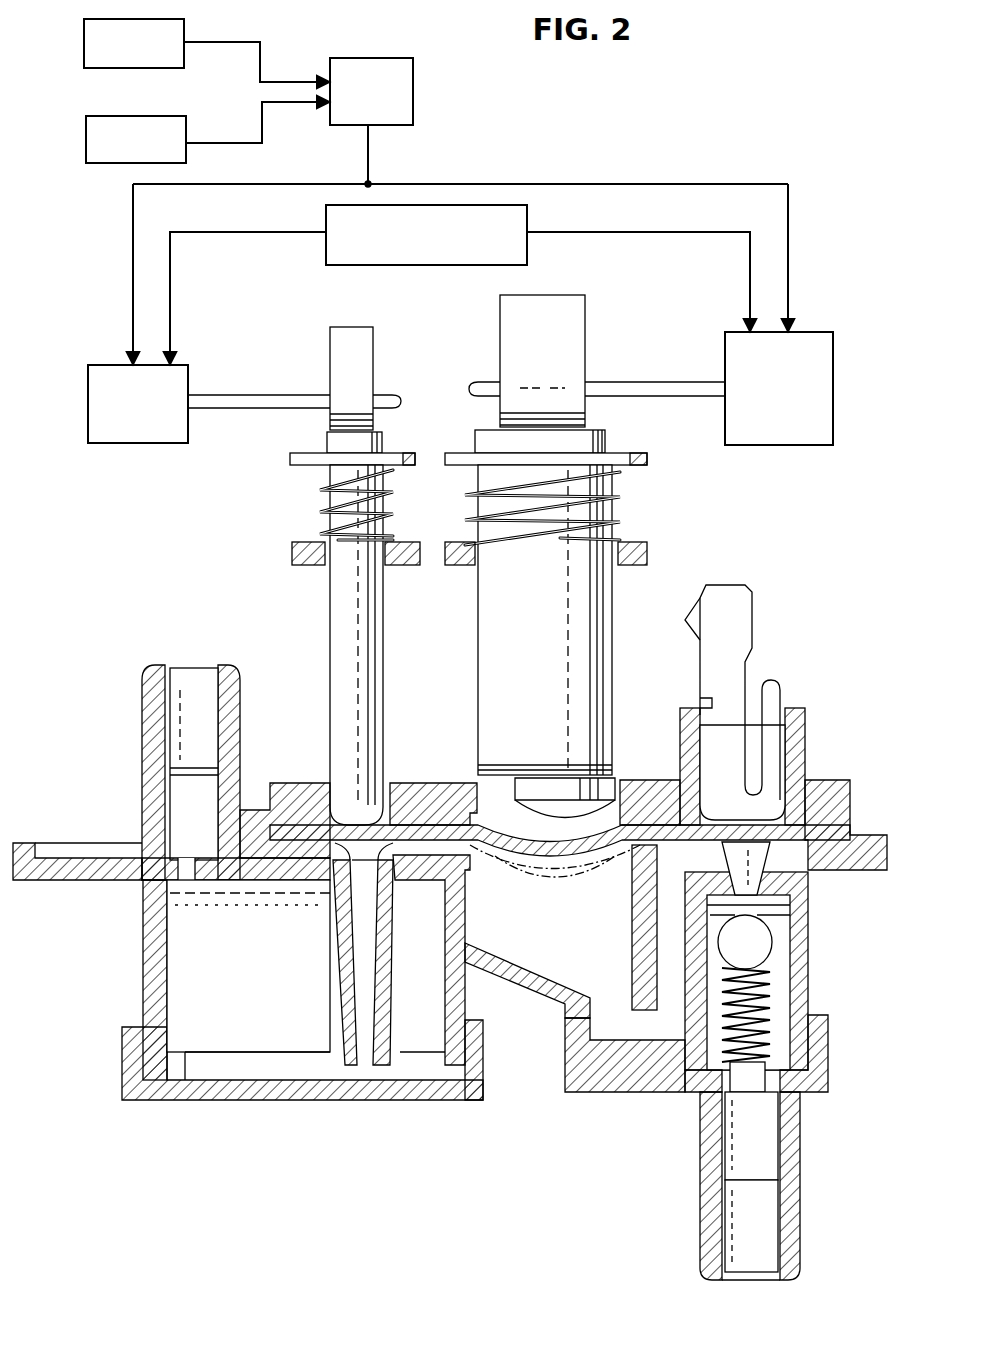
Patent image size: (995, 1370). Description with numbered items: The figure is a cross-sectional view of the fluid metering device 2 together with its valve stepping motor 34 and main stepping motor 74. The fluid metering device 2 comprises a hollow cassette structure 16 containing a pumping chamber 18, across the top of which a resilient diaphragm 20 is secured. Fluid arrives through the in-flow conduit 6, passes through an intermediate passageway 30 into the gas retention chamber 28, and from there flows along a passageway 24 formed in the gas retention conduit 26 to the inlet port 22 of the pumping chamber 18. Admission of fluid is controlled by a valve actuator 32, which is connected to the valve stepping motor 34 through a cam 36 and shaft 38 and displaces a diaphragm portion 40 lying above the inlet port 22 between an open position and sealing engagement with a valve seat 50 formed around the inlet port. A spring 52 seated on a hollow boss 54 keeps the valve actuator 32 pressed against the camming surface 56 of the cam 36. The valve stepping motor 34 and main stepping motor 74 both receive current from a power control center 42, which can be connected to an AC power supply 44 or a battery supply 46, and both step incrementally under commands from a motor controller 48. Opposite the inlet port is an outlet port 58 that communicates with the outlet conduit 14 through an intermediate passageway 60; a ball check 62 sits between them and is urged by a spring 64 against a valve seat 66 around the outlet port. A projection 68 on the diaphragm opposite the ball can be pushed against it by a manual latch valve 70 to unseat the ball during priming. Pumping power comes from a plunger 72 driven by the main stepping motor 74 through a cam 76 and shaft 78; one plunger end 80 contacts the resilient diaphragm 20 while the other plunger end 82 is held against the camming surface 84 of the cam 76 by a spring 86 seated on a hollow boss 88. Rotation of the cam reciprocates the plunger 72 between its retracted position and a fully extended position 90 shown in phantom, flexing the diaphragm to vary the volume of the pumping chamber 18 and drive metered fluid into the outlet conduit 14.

The fluid metering device 2 is at (105, 1130).
The in-flow conduit 6 is at (140, 715).
The outlet conduit 14 is at (790, 1243).
The hollow cassette structure 16 is at (585, 1092).
The pumping chamber 18 is at (562, 941).
The resilient diaphragm 20 is at (440, 782).
The inlet port 22 is at (372, 914).
The passageway 24 is at (353, 959).
The gas retention conduit 26 is at (345, 1080).
The gas retention chamber 28 is at (236, 956).
The intermediate passageway 30 is at (175, 895).
The valve actuator 32 is at (330, 648).
The valve stepping motor 34 is at (118, 445).
The cam 36 is at (330, 379).
The shaft 38 is at (268, 410).
The diaphragm portion 40 is at (338, 760).
The power control center 42 is at (413, 95).
The AC power supply 44 is at (84, 42).
The battery supply 46 is at (86, 145).
The motor controller 48 is at (424, 267).
The valve seat 50 is at (438, 977).
The spring 52 is at (320, 514).
The hollow boss 54 is at (292, 556).
The camming surface 56 is at (343, 353).
The outlet port 58 is at (755, 915).
The intermediate passageway 60 is at (760, 1085).
The ball check 62 is at (775, 1000).
The spring 64 is at (828, 1030).
The valve seat 66 is at (760, 950).
The projection 68 is at (770, 890).
The manual latch valve 70 is at (733, 642).
The plunger 72 is at (603, 668).
The main stepping motor 74 is at (765, 447).
The cam 76 is at (585, 323).
The shaft 78 is at (661, 378).
The plunger end 80 is at (553, 830).
The plunger end 82 is at (605, 428).
The camming surface 84 is at (510, 355).
The spring 86 is at (617, 498).
The hollow boss 88 is at (640, 538).
The fully extended position 90 is at (575, 872).